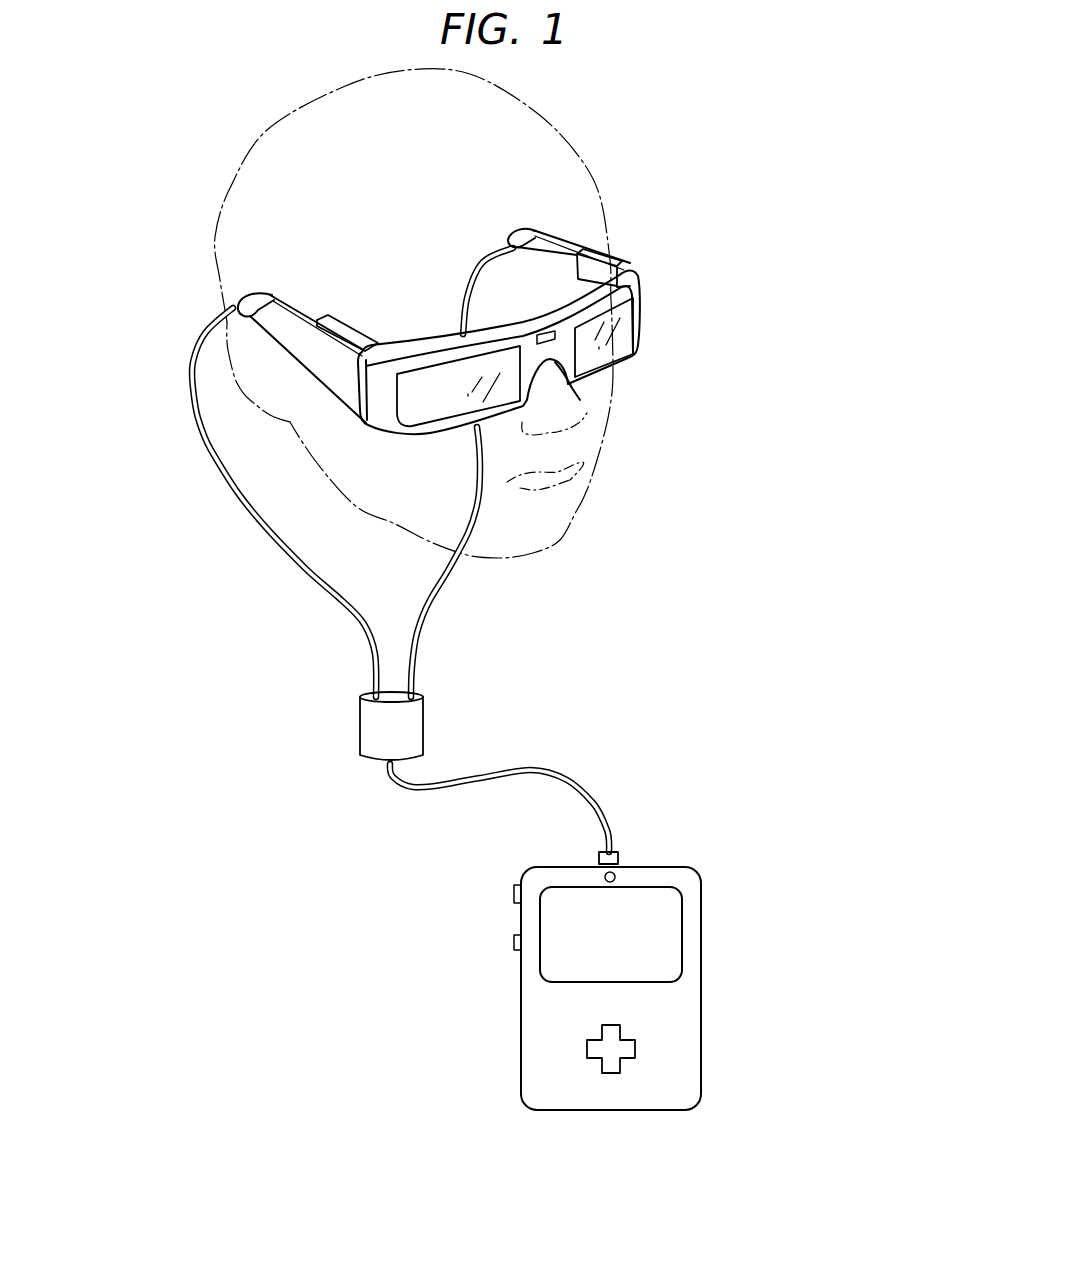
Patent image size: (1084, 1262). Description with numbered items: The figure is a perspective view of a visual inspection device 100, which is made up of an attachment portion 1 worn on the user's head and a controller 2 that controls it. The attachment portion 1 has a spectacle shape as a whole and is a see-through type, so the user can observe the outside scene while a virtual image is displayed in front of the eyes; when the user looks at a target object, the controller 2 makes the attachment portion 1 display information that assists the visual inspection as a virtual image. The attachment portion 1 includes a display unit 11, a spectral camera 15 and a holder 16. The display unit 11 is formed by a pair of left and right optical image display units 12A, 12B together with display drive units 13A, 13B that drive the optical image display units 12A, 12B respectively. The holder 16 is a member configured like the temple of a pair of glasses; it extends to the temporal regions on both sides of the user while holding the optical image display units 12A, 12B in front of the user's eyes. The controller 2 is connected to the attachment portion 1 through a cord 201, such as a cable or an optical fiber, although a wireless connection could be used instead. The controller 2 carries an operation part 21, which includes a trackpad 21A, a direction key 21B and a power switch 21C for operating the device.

The visual inspection device 100 is at (714, 220).
The attachment portion 1 is at (639, 214).
The display unit 11 is at (663, 354).
The optical image display unit 12A is at (447, 407).
The optical image display unit 12B is at (597, 357).
The display drive unit 13A is at (347, 332).
The display drive unit 13B is at (592, 254).
The spectral camera 15 is at (536, 336).
The holder 16 is at (271, 293).
The controller 2 is at (709, 845).
The cord 201 is at (544, 770).
The operation part 21 is at (734, 857).
The trackpad 21A is at (665, 935).
The direction key 21B is at (628, 1050).
The power switch 21C is at (513, 893).